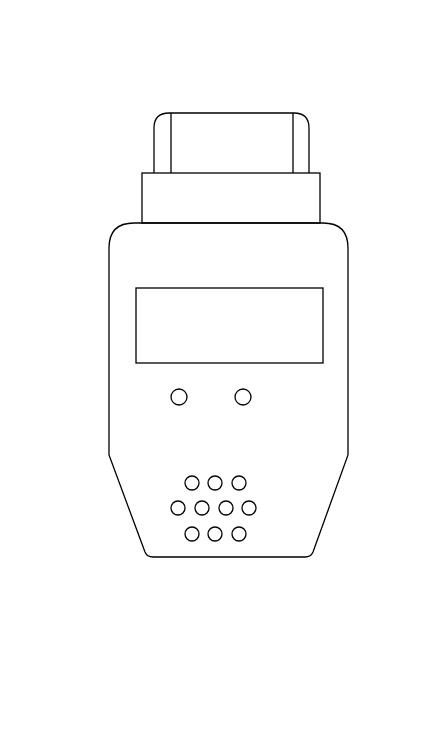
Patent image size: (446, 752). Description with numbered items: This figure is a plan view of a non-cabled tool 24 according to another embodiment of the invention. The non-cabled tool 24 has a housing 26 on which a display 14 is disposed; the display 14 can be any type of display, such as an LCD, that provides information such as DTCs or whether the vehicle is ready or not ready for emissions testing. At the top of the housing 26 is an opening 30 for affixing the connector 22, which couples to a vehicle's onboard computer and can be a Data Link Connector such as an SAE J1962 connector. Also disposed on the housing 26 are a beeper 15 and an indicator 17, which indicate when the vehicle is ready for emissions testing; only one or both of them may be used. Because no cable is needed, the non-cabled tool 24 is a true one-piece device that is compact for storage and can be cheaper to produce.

The display 14 is at (323, 323).
The beeper 15 is at (171, 508).
The indicator 17 is at (178, 405).
The connector 22 is at (222, 113).
The non-cabled tool 24 is at (378, 143).
The housing 26 is at (308, 482).
The opening 30 is at (320, 193).